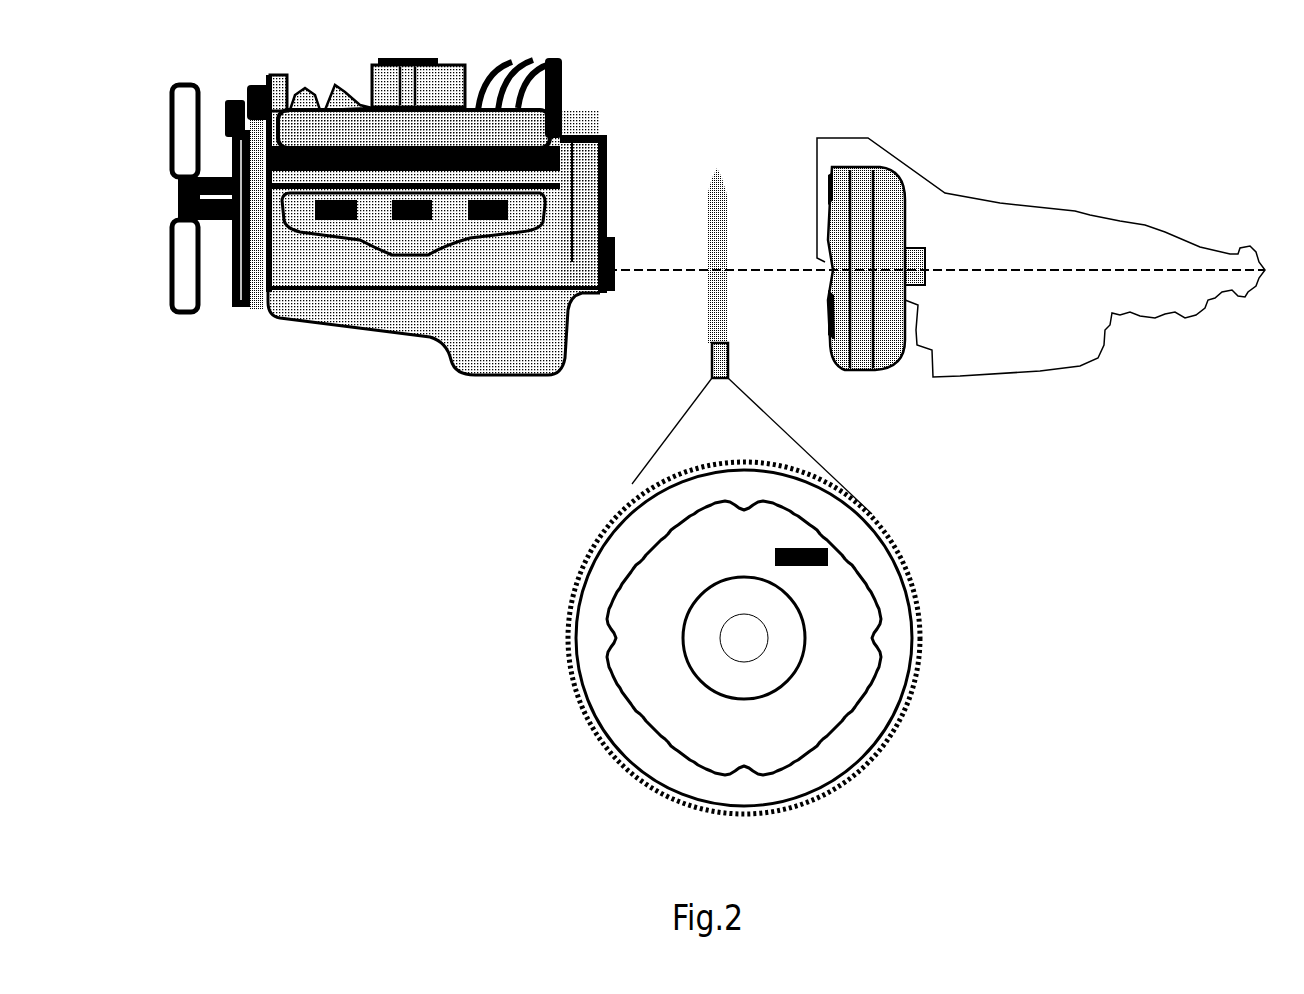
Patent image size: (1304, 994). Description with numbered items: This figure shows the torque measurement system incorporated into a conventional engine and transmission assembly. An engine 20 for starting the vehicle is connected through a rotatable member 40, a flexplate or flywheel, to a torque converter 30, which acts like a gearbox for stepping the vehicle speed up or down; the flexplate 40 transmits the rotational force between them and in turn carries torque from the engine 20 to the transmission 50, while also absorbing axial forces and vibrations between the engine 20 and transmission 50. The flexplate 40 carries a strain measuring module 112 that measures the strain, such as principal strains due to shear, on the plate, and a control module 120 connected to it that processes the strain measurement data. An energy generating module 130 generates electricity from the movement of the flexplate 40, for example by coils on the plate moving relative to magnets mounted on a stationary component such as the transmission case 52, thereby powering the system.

The engine 20 is at (578, 125).
The rotatable member 40 is at (767, 438).
The torque converter 30 is at (853, 165).
The transmission 50 is at (1036, 225).
The transmission case 52 is at (1102, 245).
The energy generating module 130 is at (856, 521).
The control module 120 is at (832, 559).
The strain measuring module 112 is at (818, 603).